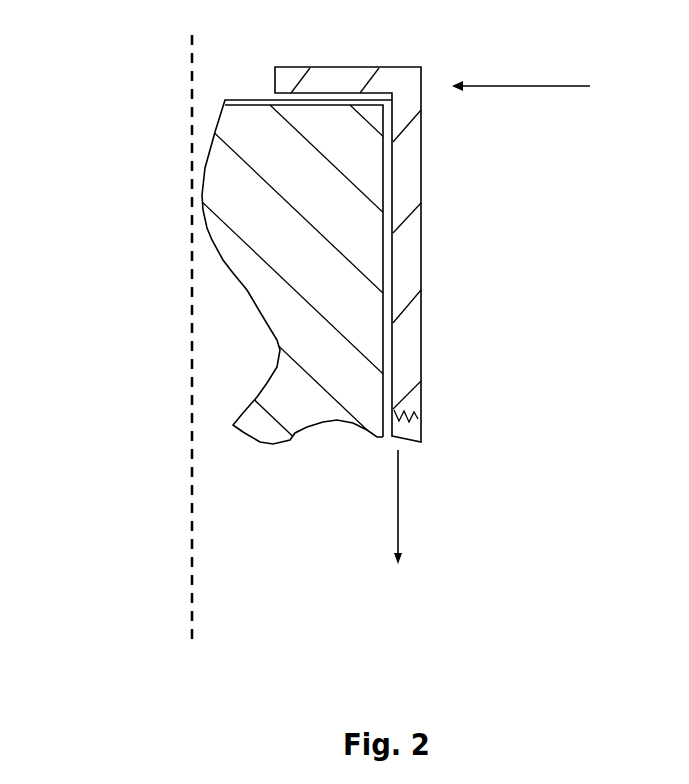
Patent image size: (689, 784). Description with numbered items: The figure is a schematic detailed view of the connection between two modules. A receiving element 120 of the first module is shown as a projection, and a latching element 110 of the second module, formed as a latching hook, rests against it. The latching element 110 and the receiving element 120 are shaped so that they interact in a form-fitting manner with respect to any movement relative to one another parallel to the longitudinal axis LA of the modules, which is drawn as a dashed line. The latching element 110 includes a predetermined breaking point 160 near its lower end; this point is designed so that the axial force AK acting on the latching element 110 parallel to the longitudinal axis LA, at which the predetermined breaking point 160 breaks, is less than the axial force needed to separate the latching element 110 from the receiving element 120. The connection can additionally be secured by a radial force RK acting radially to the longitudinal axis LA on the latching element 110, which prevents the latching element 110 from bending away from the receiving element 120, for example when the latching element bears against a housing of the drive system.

The latching element 110 is at (401, 248).
The receiving element 120 is at (268, 283).
The predetermined breaking point 160 is at (398, 418).
The radial force RK is at (542, 129).
The longitudinal axis LA is at (193, 518).
The axial force AK is at (469, 507).